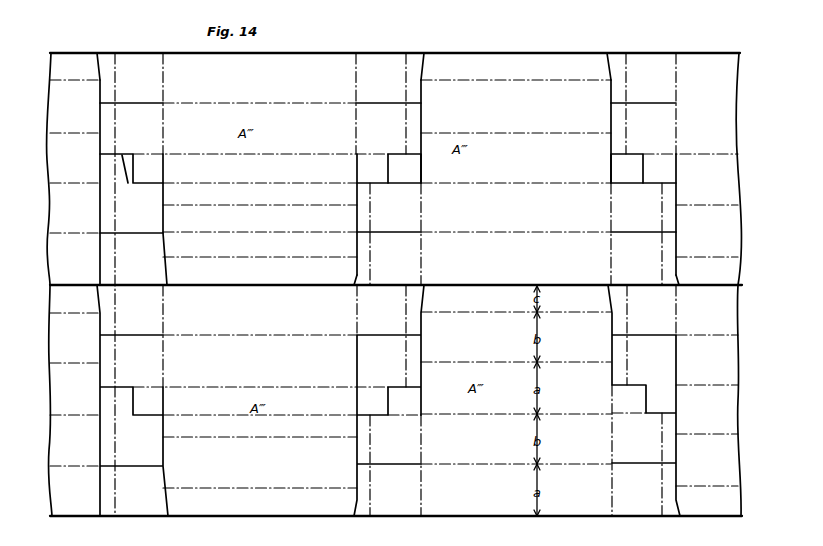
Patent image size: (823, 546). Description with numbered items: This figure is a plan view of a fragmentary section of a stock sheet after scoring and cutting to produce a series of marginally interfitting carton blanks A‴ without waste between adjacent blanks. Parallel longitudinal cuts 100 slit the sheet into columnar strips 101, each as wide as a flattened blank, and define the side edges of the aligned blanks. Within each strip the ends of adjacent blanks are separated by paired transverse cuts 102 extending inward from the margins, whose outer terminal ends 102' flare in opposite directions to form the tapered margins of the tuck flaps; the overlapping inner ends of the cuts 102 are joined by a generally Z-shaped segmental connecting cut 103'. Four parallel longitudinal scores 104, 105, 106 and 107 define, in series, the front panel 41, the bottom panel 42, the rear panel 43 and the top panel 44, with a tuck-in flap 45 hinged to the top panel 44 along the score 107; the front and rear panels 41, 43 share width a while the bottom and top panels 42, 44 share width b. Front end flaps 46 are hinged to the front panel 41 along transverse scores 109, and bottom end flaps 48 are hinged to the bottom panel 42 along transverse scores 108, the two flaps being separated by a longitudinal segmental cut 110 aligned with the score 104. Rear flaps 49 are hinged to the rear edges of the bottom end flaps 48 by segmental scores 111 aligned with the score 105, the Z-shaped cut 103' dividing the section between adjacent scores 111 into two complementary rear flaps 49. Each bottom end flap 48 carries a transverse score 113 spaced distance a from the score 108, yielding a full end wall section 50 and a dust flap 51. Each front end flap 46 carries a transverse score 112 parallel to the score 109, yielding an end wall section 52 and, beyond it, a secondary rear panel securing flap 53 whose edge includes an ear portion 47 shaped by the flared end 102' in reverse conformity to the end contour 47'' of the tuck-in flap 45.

The longitudinal cut 100 is at (73, 52).
The columnar strip 101 is at (50, 183).
The transverse cut 102 is at (421, 182).
The flared end of transverse cut 102' is at (414, 169).
The Z-shaped segmental connecting cut 103' is at (393, 167).
The longitudinal segmental cut 110 is at (136, 103).
The longitudinal segmental score 111 is at (412, 182).
The transverse score 108 is at (421, 198).
The transverse score 109 is at (421, 247).
The longitudinal score 104 is at (556, 232).
The longitudinal score 105 is at (556, 183).
The longitudinal score 106 is at (564, 133).
The longitudinal score 107 is at (555, 80).
The front panel 41 is at (516, 357).
The bottom panel 42 is at (516, 215).
The rear panel 43 is at (516, 165).
The top panel 44 is at (516, 114).
The tuck-in flap 45 is at (516, 70).
The front end flap 46 is at (382, 276).
The ear portion 47 is at (511, 391).
The end contour of tuck-in flap 47'' is at (341, 540).
The bottom end flap 48 is at (365, 194).
The rear flap 49 is at (515, 168).
The end wall section 50 is at (396, 211).
The dust flap 51 is at (370, 211).
The end wall section 52 is at (396, 258).
The secondary rear panel securing flap 53 is at (366, 255).
The transverse score 112 is at (368, 245).
The transverse score 113 is at (370, 223).